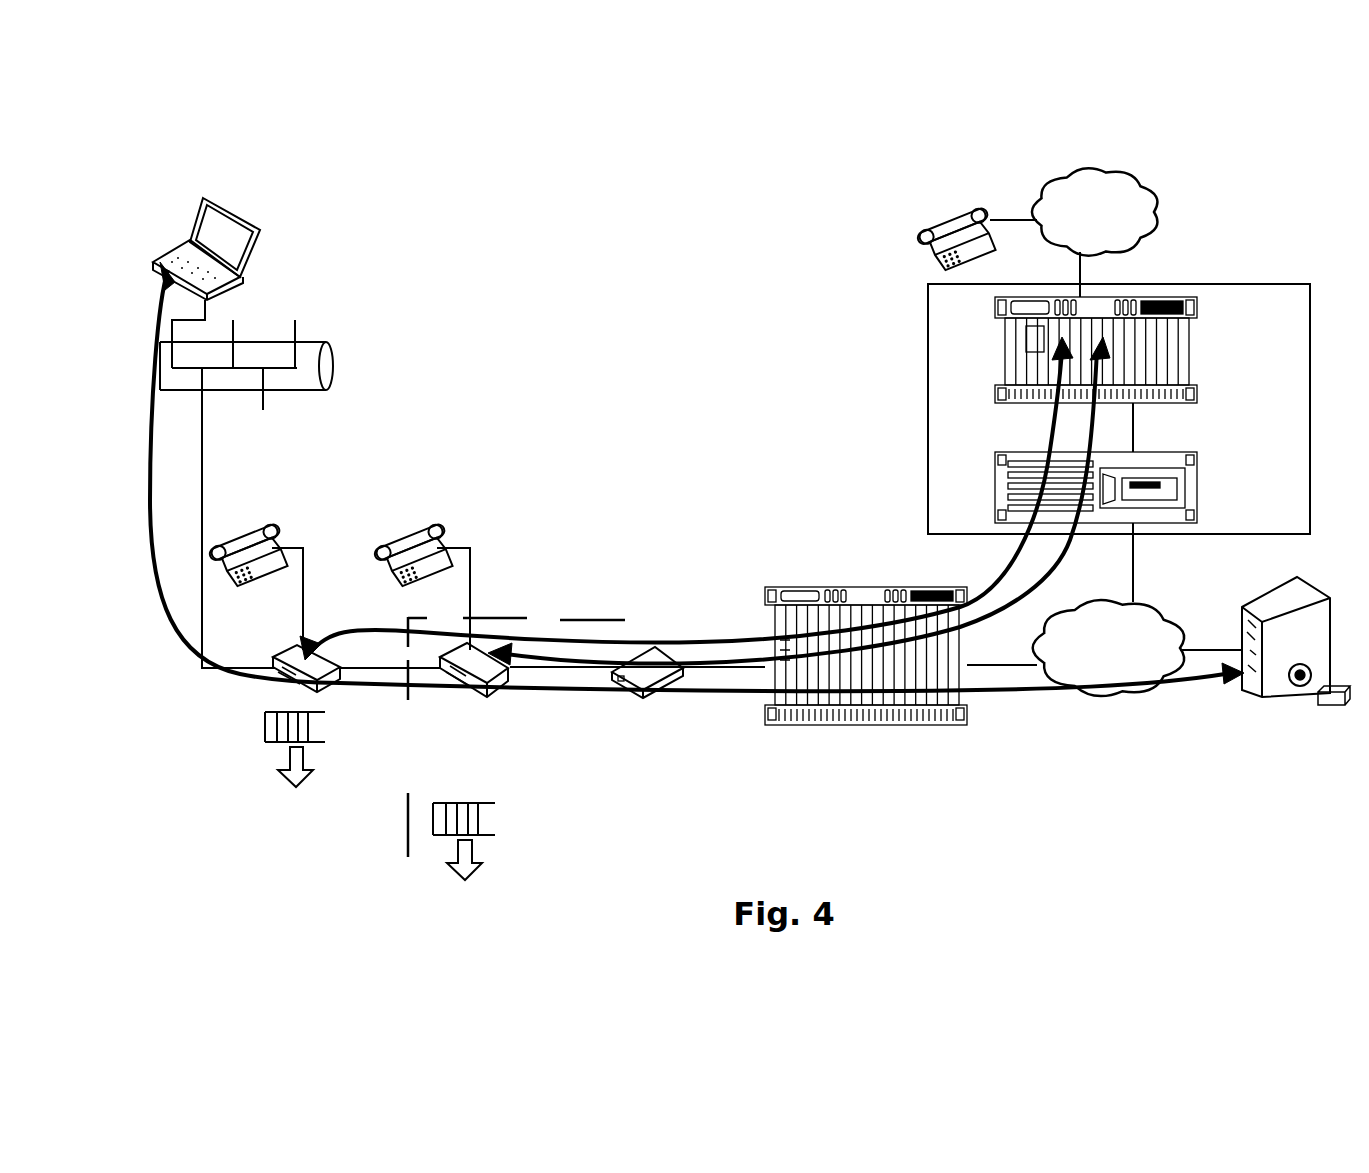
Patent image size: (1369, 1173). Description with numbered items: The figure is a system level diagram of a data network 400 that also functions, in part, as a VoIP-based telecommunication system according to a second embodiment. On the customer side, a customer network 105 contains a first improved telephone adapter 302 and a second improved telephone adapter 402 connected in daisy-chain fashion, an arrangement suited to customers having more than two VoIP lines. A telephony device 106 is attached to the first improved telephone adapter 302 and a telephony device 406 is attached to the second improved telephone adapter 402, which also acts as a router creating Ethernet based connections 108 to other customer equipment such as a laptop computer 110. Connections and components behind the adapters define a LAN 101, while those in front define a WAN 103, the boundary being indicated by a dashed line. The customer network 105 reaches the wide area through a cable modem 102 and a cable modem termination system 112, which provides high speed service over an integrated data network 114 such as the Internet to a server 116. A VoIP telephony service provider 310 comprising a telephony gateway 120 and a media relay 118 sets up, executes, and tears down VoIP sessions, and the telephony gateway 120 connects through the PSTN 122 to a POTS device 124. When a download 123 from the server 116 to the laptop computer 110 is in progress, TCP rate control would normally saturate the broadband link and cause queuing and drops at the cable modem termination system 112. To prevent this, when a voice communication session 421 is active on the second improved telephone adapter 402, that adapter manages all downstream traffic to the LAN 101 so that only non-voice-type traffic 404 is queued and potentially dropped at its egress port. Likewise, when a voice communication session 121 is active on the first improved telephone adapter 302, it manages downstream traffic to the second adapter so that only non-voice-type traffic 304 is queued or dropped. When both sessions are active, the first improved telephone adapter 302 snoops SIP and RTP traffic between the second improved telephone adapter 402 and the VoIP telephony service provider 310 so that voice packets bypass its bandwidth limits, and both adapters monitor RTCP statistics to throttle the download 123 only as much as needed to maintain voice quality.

The data network 400 is at (578, 240).
The LAN 101 is at (230, 845).
The WAN 103 is at (616, 845).
The laptop computer 110 is at (206, 195).
The Ethernet based connections 108 is at (150, 366).
The telephony device 406 is at (283, 538).
The telephony device 106 is at (433, 527).
The customer network 105 is at (467, 412).
The second improved telephone adapter 402 is at (277, 693).
The non-voice-type traffic 404 is at (325, 742).
The first improved telephone adapter 302 is at (505, 700).
The non-voice-type traffic 304 is at (495, 835).
The cable modem 102 is at (650, 652).
The cable modem termination system 112 is at (887, 727).
The VoIP telephony service provider 310 is at (928, 325).
The telephony gateway 120 is at (1190, 312).
The media relay 118 is at (1190, 447).
The PSTN 122 is at (1147, 173).
The POTS device 124 is at (920, 245).
The voice communication session 421 is at (1007, 553).
The voice communication session 121 is at (1007, 610).
The integrated data network 114 is at (1157, 650).
The download 123 is at (1020, 687).
The server 116 is at (1260, 680).